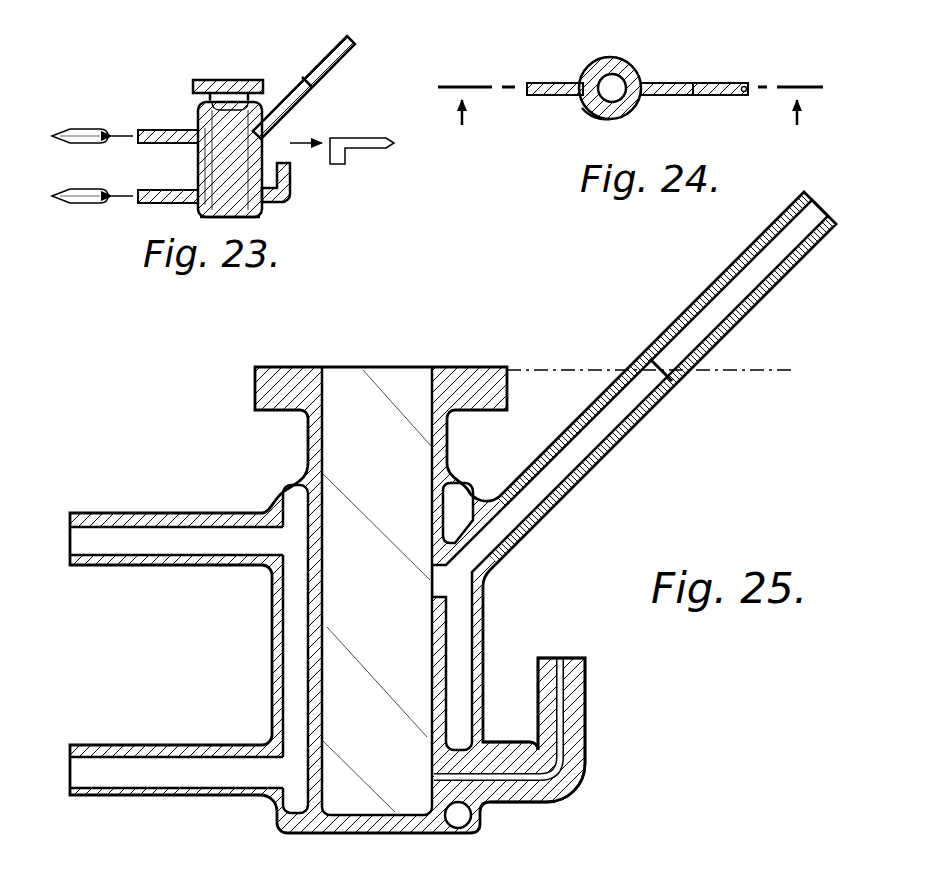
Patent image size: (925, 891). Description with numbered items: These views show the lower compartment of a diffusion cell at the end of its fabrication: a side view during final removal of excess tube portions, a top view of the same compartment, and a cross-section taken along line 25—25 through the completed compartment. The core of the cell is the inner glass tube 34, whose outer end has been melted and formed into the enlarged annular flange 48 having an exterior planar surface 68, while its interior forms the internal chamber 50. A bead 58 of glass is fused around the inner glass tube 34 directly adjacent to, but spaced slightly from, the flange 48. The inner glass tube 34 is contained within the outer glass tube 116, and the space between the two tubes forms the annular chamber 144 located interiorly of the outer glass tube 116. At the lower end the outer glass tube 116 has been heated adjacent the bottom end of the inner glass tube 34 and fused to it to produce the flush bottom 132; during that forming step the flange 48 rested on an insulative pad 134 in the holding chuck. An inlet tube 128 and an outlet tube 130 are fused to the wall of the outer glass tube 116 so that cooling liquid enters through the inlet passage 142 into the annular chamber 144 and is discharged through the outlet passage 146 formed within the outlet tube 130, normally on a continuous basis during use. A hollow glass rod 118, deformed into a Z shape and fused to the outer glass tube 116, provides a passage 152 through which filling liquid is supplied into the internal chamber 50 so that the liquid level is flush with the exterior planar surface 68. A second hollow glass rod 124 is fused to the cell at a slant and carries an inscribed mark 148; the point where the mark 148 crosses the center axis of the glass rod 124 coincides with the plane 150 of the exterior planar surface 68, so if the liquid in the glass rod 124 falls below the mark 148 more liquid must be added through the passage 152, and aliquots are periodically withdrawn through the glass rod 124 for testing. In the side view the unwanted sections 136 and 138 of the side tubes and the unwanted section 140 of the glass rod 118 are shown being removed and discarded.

In FIG. 24, the section line 25— 25 is at (630, 128).
In FIG. 23, the inner glass tube 34 is at (262, 150).
In FIG. 25, the inner glass tube 34 is at (305, 648).
In FIG. 23, the enlarged annular flange 48 is at (190, 86).
In FIG. 24, the enlarged annular flange 48 is at (595, 115).
In FIG. 25, the enlarged annular flange 48 is at (255, 382).
In FIG. 24, the internal chamber 50 is at (598, 78).
In FIG. 25, the internal chamber 50 is at (325, 450).
In FIG. 23, the bead 58 is at (195, 105).
In FIG. 25, the bead 58 is at (460, 472).
In FIG. 23, the exterior planar surface 68 is at (208, 78).
In FIG. 24, the exterior planar surface 68 is at (615, 72).
In FIG. 25, the exterior planar surface 68 is at (472, 366).
In FIG. 23, the outer glass tube 116 is at (196, 182).
In FIG. 25, the outer glass tube 116 is at (488, 630).
In FIG. 23, the hollow glass rod 118 is at (292, 190).
In FIG. 24, the hollow glass rod 118 is at (672, 83).
In FIG. 25, the hollow glass rod 118 is at (588, 755).
In FIG. 23, the hollow glass rod 124 is at (283, 78).
In FIG. 24, the hollow glass rod 124 is at (748, 100).
In FIG. 25, the hollow glass rod 124 is at (595, 473).
In FIG. 23, the inlet tube 128 is at (145, 210).
In FIG. 25, the inlet tube 128 is at (215, 800).
In FIG. 23, the outlet tube 130 is at (150, 147).
In FIG. 24, the outlet tube 130 is at (548, 82).
In FIG. 25, the outlet tube 130 is at (220, 568).
In FIG. 25, the flush bottom 132 is at (452, 830).
In FIG. 23, the insulative pad 134 is at (250, 217).
In FIG. 23, the unwanted section 136 is at (95, 205).
In FIG. 23, the unwanted section 138 is at (97, 126).
In FIG. 23, the unwanted section 140 is at (355, 135).
In FIG. 25, the inlet passage 142 is at (170, 745).
In FIG. 25, the annular chamber 144 is at (294, 708).
In FIG. 25, the outlet passage 146 is at (165, 520).
In FIG. 23, the mark 148 is at (322, 80).
In FIG. 24, the mark 148 is at (697, 97).
In FIG. 25, the mark 148 is at (667, 362).
In FIG. 25, the plane 150 is at (598, 368).
In FIG. 25, the passage 152 is at (560, 705).